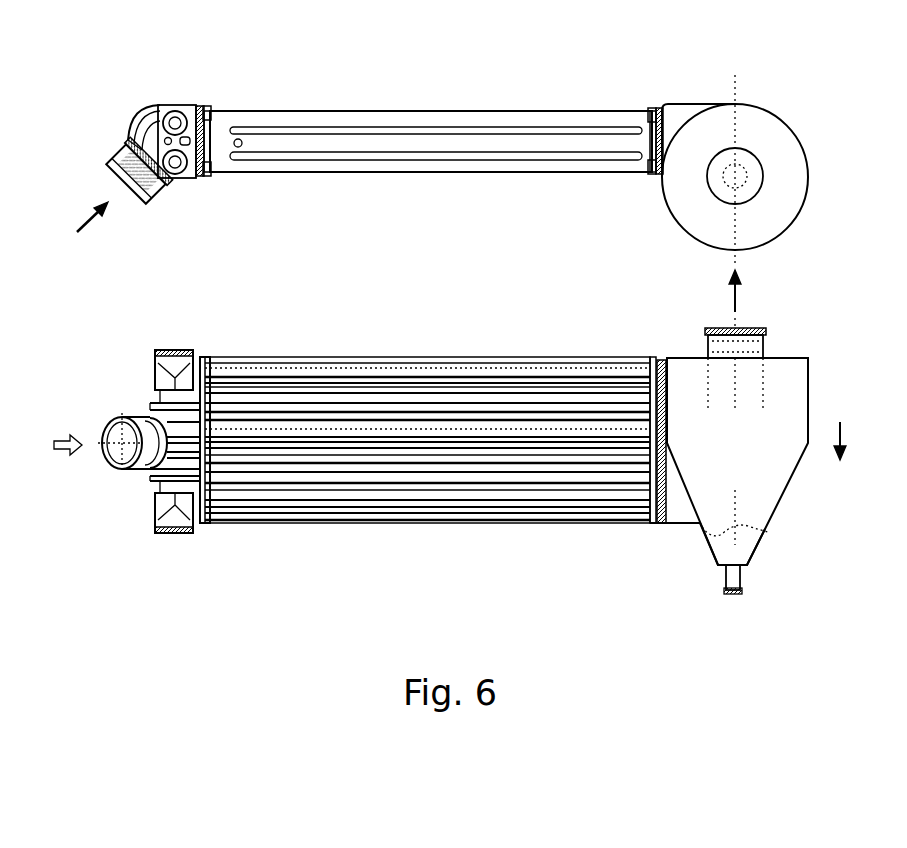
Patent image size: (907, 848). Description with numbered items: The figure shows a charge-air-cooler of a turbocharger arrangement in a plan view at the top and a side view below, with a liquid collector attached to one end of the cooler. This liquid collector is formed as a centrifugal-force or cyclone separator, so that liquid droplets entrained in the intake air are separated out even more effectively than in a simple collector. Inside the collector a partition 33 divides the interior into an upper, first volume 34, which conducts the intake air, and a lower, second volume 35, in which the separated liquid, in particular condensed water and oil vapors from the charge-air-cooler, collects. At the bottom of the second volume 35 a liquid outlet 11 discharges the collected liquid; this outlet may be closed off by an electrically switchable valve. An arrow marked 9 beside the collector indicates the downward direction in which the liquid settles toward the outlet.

The first volume 34 is at (746, 474).
The partition 33 is at (762, 531).
The second volume 35 is at (705, 545).
The liquid outlet 11 is at (722, 585).
The direction of gravity 9 is at (850, 441).